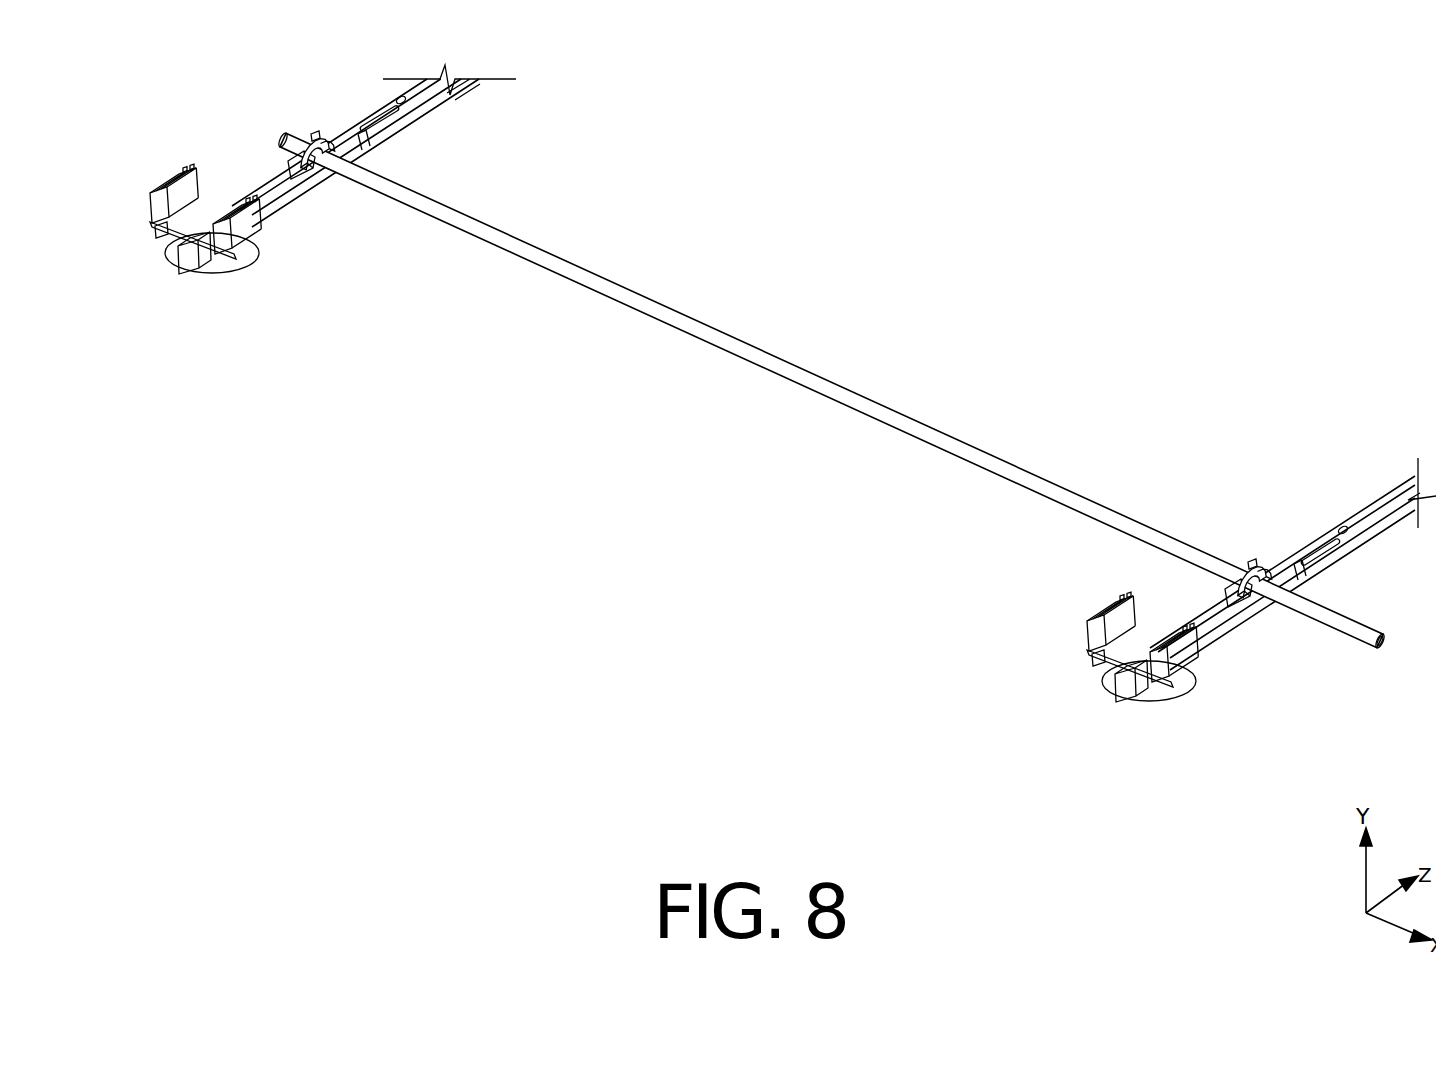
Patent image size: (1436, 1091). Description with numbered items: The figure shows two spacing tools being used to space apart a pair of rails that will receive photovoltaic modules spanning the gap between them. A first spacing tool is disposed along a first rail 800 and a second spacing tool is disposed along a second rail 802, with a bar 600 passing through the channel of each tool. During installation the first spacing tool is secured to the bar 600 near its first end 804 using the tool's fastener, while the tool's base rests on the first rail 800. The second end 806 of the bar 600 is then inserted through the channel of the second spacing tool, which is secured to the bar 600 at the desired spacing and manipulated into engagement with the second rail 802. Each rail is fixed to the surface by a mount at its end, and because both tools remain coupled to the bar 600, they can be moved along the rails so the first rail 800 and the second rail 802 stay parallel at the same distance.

The bar 600 is at (688, 314).
The first rail 800 is at (1358, 527).
The second rail 802 is at (437, 95).
The first end 804 is at (1383, 655).
The second end 806 is at (268, 133).